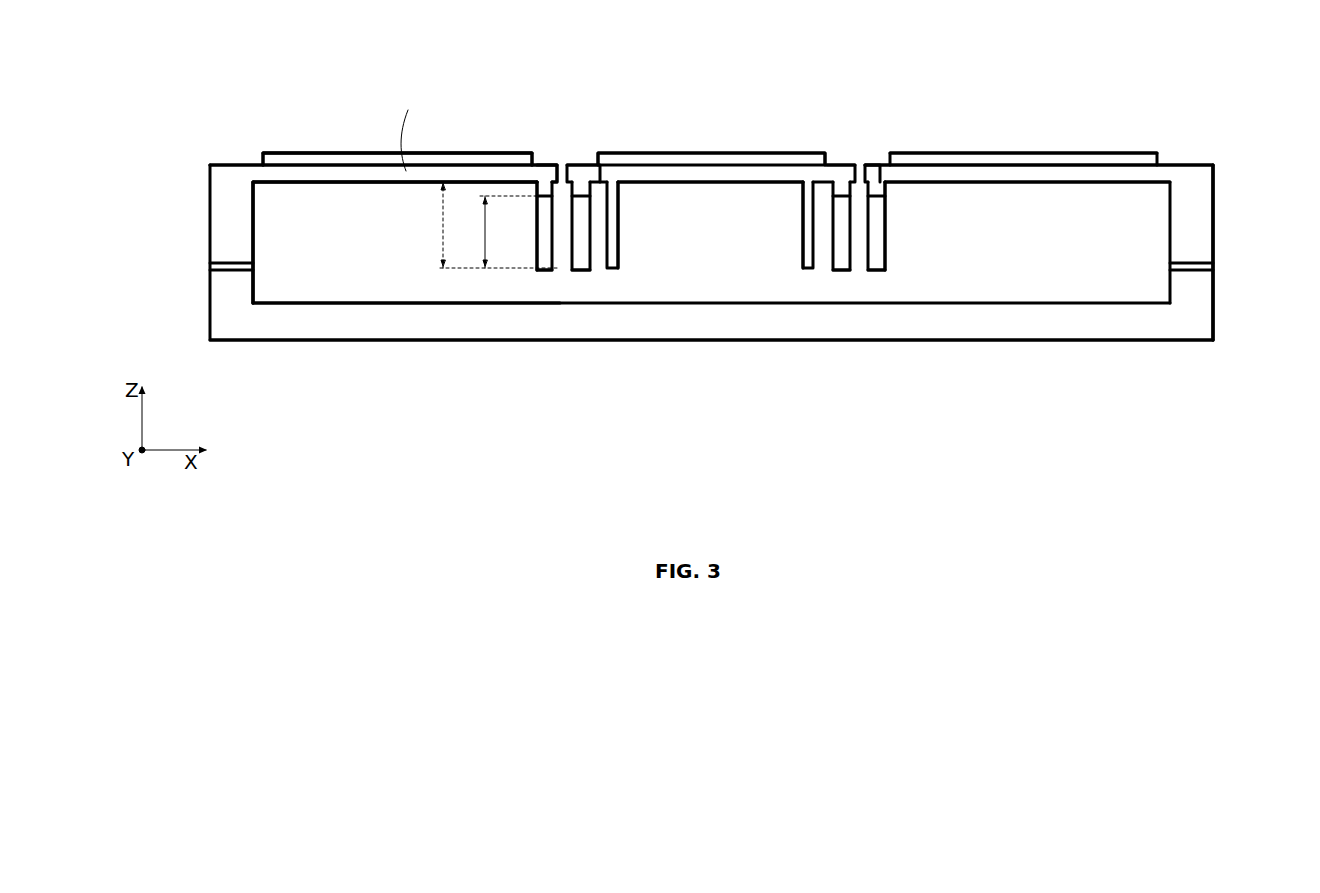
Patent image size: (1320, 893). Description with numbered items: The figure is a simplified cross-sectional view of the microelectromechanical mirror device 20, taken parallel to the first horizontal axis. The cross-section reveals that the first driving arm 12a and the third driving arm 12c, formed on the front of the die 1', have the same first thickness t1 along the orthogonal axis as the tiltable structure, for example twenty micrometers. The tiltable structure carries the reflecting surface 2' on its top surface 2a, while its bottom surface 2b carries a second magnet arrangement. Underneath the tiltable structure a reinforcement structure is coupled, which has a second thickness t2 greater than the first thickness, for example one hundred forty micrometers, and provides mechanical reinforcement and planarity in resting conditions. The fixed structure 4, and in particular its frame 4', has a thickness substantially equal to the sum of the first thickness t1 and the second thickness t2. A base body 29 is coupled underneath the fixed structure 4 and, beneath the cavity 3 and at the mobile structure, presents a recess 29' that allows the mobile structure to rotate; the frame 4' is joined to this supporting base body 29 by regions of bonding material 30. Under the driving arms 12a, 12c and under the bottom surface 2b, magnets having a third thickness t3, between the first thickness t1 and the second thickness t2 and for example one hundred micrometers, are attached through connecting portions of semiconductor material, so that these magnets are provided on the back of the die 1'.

The die 1' is at (335, 199).
The microelectromechanical mirror device 20 is at (1213, 130).
The cavity 3 is at (258, 220).
The reflecting surface 2' is at (711, 141).
The fixed structure 4 is at (1061, 229).
The frame 4' is at (1233, 252).
The base body 29 is at (670, 322).
The recess 29' is at (206, 242).
The bonding material regions 30 is at (207, 265).
The first driving arm 12a is at (314, 180).
The third driving arm 12c is at (958, 176).
The first thickness t1 is at (410, 129).
The second thickness t2 is at (491, 225).
The third thickness t3 is at (506, 232).
The top surface of tiltable structure 2a is at (590, 161).
The bottom surface of tiltable structure 2b is at (660, 188).